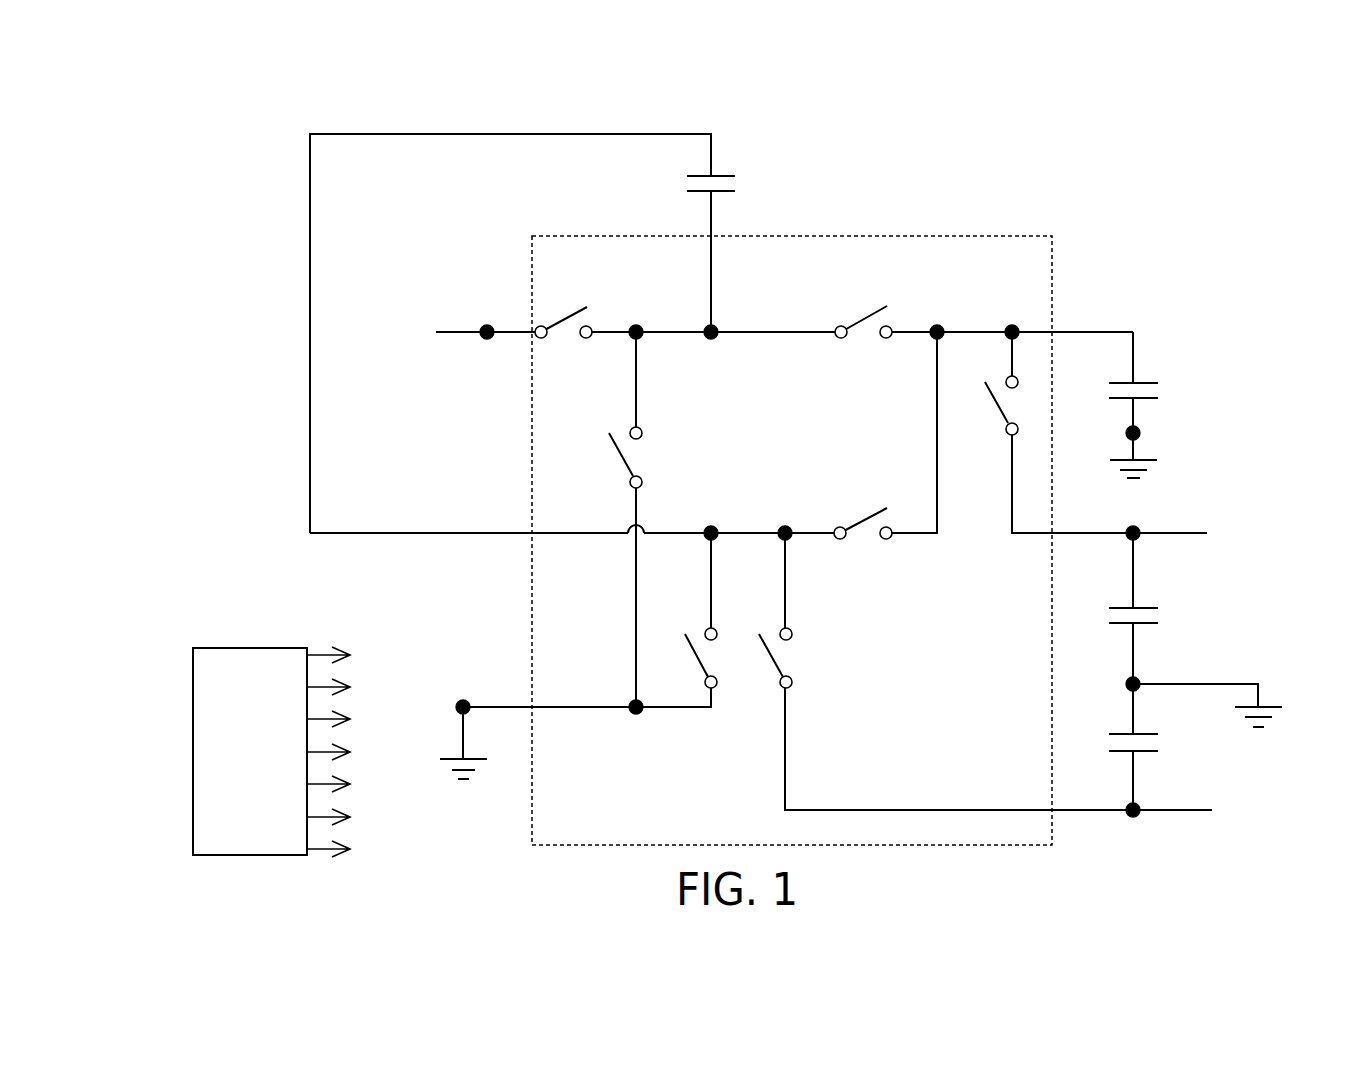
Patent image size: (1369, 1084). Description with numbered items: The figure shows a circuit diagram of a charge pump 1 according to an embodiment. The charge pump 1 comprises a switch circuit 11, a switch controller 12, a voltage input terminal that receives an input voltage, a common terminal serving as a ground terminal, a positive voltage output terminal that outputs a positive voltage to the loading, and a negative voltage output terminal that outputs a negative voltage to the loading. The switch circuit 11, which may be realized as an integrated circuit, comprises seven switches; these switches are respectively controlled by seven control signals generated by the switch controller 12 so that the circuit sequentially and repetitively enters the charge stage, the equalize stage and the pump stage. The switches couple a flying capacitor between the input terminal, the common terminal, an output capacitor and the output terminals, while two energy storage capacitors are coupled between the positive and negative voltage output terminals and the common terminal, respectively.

The charge pump 1 is at (109, 129).
The switch circuit 11 is at (895, 236).
The switch controller 12 is at (250, 648).